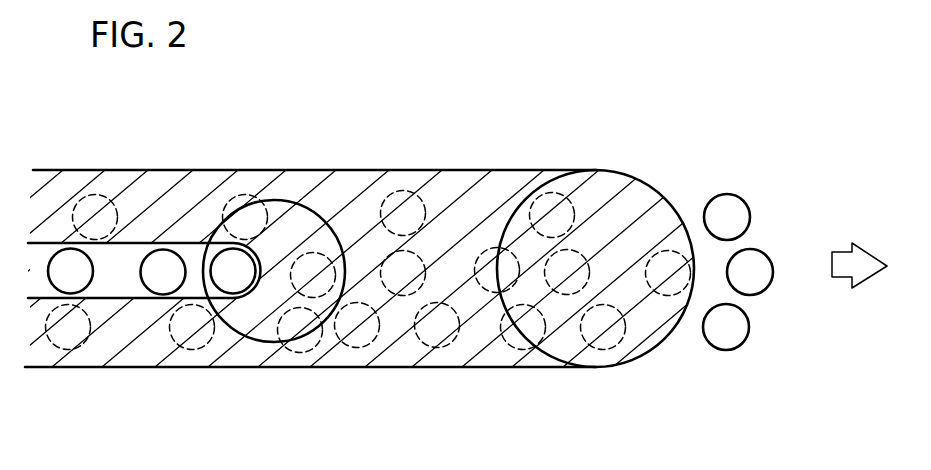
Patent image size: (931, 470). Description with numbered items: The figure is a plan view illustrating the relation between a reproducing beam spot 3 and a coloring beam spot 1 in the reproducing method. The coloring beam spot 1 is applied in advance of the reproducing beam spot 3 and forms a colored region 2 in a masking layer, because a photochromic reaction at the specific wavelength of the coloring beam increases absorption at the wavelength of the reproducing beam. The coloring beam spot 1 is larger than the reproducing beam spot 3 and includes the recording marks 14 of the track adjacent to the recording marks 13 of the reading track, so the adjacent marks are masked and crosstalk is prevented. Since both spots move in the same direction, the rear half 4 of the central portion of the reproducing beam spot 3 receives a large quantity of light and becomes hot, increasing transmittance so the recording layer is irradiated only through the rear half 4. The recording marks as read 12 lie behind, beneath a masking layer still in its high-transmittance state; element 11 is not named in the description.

The coloring beam spot 1 is at (641, 358).
The colored region 2 is at (533, 170).
The reproducing beam spot 3 is at (253, 340).
The rear half 4 is at (230, 263).
The groove 11 is at (247, 238).
The recording marks as read 12 is at (175, 263).
The recording marks of a reading track 13 is at (419, 252).
The recording marks of an adjacent track 14 is at (435, 350).